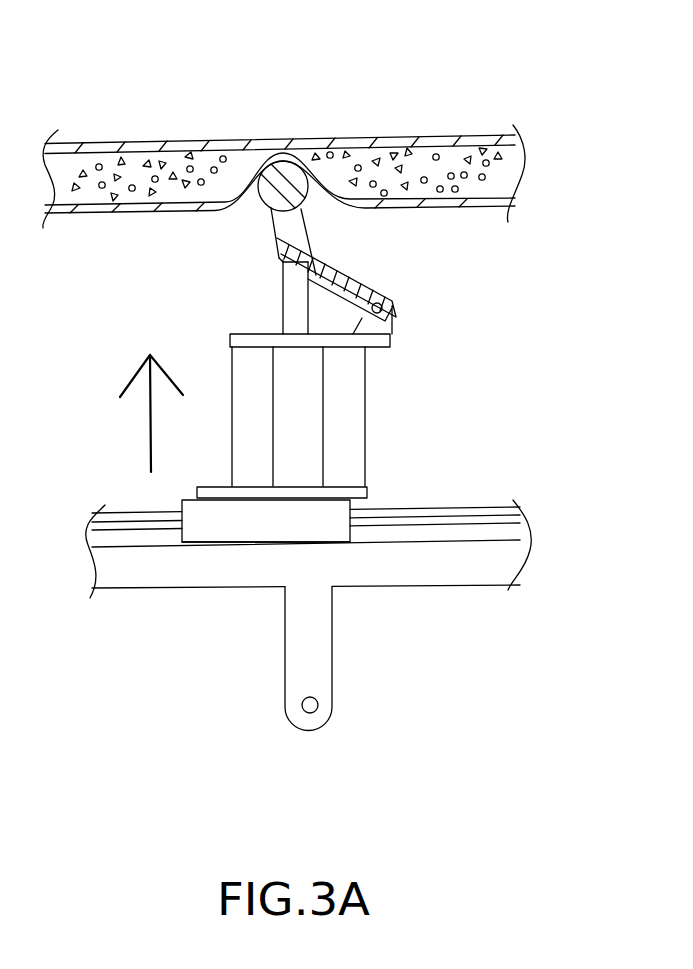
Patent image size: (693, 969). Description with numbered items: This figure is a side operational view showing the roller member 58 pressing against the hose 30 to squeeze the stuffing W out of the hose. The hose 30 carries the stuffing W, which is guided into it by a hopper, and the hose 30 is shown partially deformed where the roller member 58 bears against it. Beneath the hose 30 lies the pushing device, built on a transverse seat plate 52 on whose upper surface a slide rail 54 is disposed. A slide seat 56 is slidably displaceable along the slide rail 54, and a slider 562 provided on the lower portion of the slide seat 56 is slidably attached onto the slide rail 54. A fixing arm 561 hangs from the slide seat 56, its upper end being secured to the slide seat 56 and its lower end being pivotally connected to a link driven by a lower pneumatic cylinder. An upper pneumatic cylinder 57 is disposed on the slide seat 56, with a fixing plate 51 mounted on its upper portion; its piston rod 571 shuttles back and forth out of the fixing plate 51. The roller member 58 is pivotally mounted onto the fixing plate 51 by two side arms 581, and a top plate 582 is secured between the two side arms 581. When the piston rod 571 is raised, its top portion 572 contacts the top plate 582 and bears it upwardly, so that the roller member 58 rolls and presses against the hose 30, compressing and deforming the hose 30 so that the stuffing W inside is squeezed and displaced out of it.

The hose 30 is at (145, 147).
The stuffing W is at (465, 165).
The roller member 58 is at (268, 193).
The side arms 581 is at (298, 230).
The top plate 582 is at (340, 283).
The top portion 572 is at (280, 262).
The piston rod 571 is at (297, 298).
The fixing plate 51 is at (377, 340).
The upper pneumatic cylinder 57 is at (348, 438).
The slide seat 56 is at (333, 491).
The slide rail 54 is at (400, 523).
The transverse seat plate 52 is at (443, 563).
The slider 562 is at (250, 523).
The fixing arm 561 is at (305, 643).